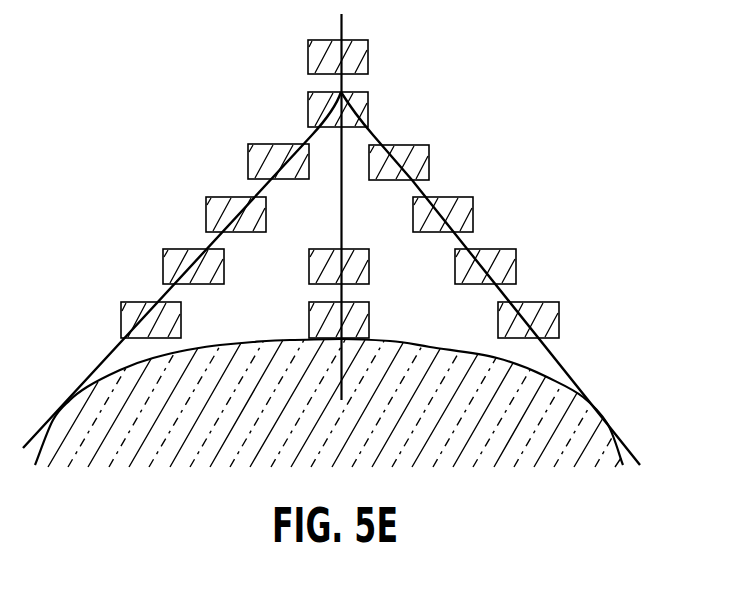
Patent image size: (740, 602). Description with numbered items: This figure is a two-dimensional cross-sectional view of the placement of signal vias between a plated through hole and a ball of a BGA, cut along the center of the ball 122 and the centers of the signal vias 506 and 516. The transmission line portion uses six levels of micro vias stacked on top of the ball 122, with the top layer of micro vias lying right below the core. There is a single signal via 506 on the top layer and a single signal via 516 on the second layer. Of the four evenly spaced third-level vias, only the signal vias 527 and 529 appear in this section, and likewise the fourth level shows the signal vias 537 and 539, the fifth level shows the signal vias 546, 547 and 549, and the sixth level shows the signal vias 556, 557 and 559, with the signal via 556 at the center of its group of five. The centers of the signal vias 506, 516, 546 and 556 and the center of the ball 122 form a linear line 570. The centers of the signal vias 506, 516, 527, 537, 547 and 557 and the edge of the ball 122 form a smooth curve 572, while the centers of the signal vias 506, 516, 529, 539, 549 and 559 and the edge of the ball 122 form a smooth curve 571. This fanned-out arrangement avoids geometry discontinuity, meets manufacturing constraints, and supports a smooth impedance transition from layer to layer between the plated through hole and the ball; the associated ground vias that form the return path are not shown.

The ball 122 is at (603, 418).
The signal via 506 is at (365, 51).
The signal via 516 is at (365, 101).
The signal via 529 is at (256, 154).
The signal via 527 is at (426, 158).
The signal via 539 is at (213, 207).
The signal via 537 is at (468, 210).
The signal via 549 is at (170, 257).
The signal via 547 is at (508, 258).
The signal via 546 is at (365, 273).
The signal via 559 is at (128, 313).
The signal via 557 is at (552, 321).
The signal via 556 is at (365, 322).
The linear line 570 is at (350, 235).
The smooth curve 571 is at (300, 132).
The smooth curve 572 is at (382, 131).